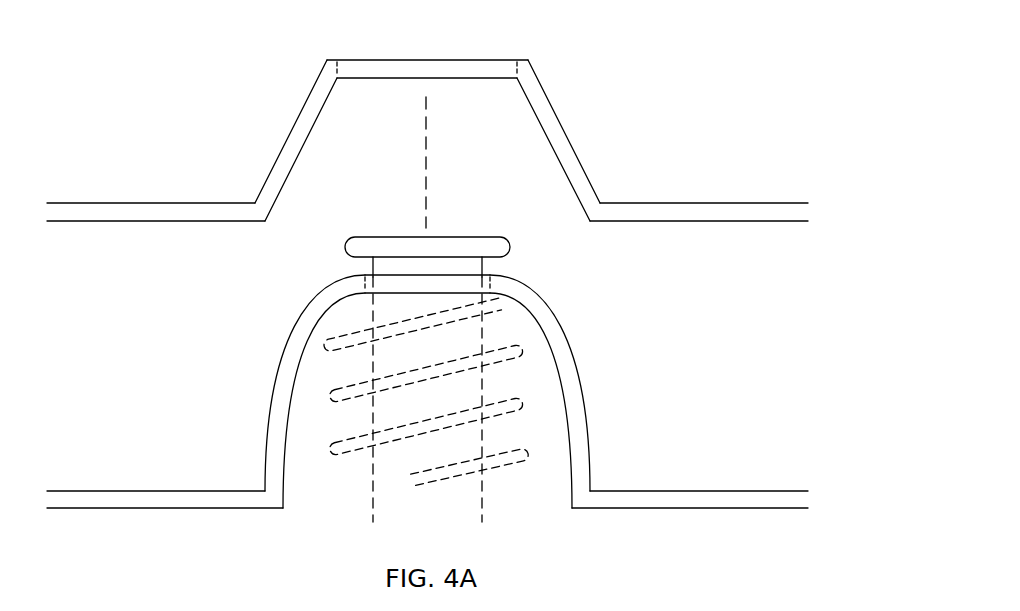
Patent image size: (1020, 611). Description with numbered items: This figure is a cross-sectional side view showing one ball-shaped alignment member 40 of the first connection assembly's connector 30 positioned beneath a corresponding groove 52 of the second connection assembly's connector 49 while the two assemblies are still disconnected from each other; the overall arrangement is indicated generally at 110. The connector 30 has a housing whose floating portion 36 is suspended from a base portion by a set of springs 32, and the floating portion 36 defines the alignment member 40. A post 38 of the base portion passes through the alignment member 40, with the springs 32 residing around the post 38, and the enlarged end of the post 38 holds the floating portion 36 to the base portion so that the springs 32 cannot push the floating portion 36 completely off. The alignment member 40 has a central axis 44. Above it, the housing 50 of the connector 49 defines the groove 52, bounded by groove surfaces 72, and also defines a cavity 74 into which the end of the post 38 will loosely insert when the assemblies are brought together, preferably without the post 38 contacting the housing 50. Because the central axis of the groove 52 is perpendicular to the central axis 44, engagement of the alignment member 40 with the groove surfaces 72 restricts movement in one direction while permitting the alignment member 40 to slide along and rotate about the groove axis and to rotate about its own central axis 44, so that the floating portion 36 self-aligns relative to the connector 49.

The mold assembly 110 is at (688, 84).
The connector 49 is at (192, 141).
The cavities 74 is at (455, 63).
The groove surfaces 72 is at (328, 108).
The housing 50 is at (663, 201).
The grooves 52 is at (554, 221).
The central axis 44 is at (427, 168).
The connector 30 is at (183, 443).
The ball-shaped alignment members 40 is at (587, 410).
The floating portion 36 is at (640, 488).
The posts 38 is at (373, 492).
The springs 32 is at (498, 412).